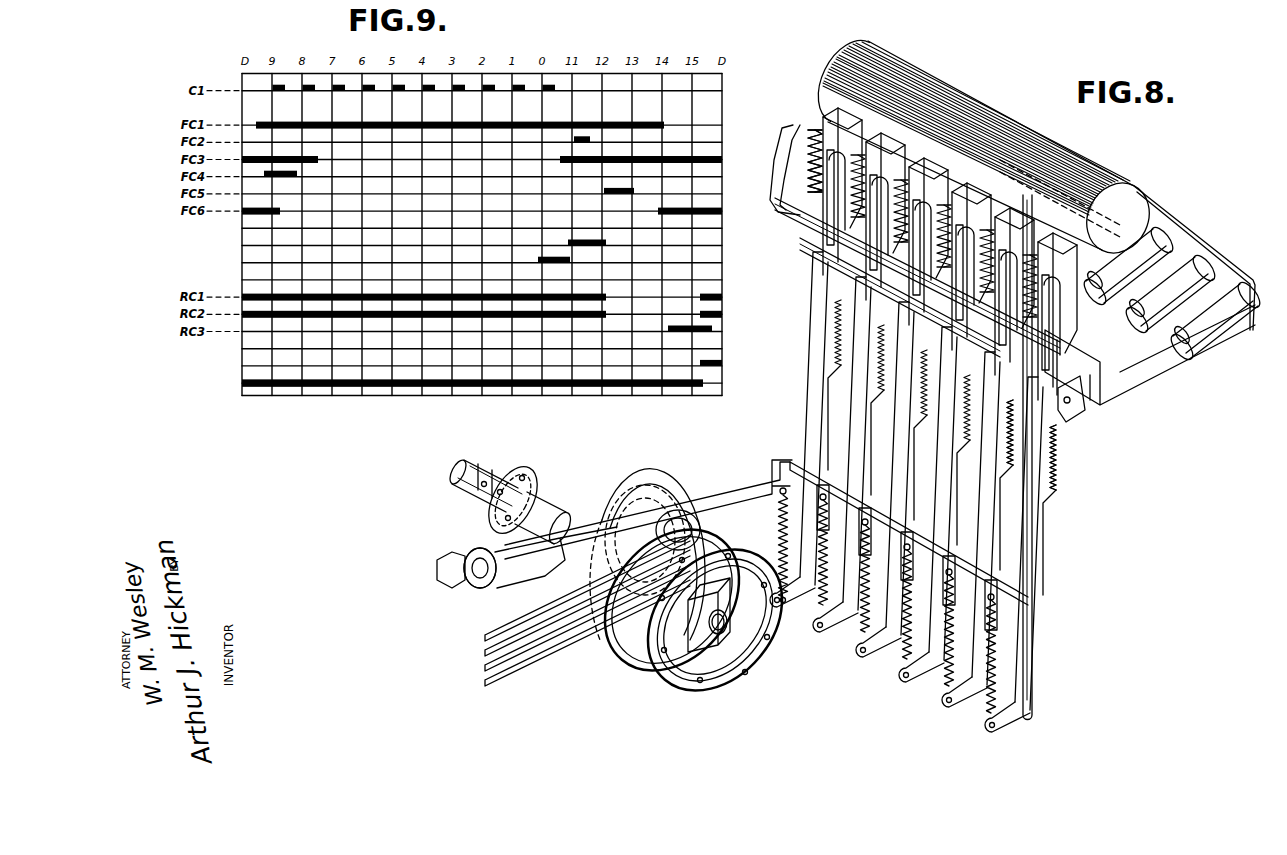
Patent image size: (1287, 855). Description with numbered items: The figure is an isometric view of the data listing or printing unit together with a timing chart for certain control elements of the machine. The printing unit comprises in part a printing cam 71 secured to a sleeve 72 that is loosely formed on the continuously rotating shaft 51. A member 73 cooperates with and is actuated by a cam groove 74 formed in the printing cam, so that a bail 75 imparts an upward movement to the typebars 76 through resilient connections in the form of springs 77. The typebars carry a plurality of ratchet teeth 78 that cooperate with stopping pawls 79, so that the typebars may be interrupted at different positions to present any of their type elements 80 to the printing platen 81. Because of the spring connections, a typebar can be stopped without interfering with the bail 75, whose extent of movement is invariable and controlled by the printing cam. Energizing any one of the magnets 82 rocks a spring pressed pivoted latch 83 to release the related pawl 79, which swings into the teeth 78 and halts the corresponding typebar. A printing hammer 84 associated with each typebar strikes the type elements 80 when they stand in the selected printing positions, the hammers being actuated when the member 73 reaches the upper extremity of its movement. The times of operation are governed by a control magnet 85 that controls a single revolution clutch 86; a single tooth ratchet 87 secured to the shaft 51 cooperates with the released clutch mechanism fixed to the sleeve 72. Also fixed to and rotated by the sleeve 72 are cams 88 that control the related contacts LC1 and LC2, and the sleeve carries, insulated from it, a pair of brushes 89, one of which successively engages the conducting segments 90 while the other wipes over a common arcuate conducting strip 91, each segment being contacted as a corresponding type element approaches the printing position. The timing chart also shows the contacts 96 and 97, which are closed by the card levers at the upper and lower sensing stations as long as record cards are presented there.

In FIG. 8, the continuously rotating shaft 51 is at (462, 470).
In FIG. 8, the printing cam 71 is at (603, 482).
In FIG. 8, the sleeve 72 is at (548, 502).
In FIG. 8, the member 73 is at (733, 500).
In FIG. 8, the cam groove 74 is at (676, 512).
In FIG. 8, the bail 75 is at (906, 530).
In FIG. 8, the typebars 76 is at (1036, 533).
In FIG. 8, the springs 77 is at (990, 707).
In FIG. 8, the ratchet teeth 78 is at (1051, 472).
In FIG. 8, the stopping pawls 79 is at (1078, 410).
In FIG. 8, the type elements 80 is at (822, 132).
In FIG. 8, the printing platen 81 is at (978, 100).
In FIG. 8, the magnets 82 is at (1220, 350).
In FIG. 8, the spring pressed pivoted latch 83 is at (1105, 385).
In FIG. 8, the printing hammer 84 is at (790, 168).
In FIG. 8, the control magnet 85 is at (520, 585).
In FIG. 8, the single revolution clutch 86 is at (478, 528).
In FIG. 8, the single tooth ratchet 87 is at (520, 474).
In FIG. 8, the cams 88 is at (641, 520).
In FIG. 8, the brushes 89 is at (757, 536).
In FIG. 8, the conducting segments 90 is at (760, 640).
In FIG. 8, the common arcuate conducting strip 91 is at (748, 590).
In FIG. 9, the contacts 96 is at (233, 389).
In FIG. 9, the contacts 97 is at (427, 379).
In FIG. 9, the contacts LC1 is at (240, 246).
In FIG. 8, the contacts LC1 is at (592, 650).
In FIG. 9, the contacts LC2 is at (240, 263).
In FIG. 8, the contacts LC2 is at (625, 655).